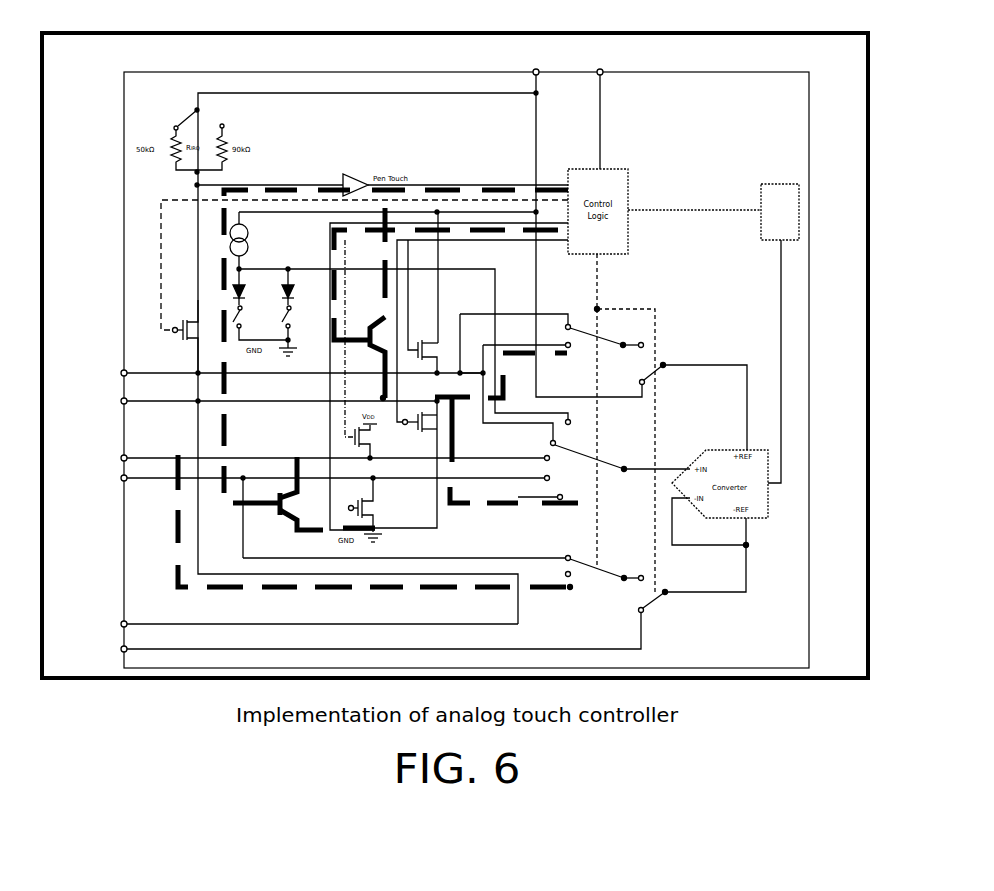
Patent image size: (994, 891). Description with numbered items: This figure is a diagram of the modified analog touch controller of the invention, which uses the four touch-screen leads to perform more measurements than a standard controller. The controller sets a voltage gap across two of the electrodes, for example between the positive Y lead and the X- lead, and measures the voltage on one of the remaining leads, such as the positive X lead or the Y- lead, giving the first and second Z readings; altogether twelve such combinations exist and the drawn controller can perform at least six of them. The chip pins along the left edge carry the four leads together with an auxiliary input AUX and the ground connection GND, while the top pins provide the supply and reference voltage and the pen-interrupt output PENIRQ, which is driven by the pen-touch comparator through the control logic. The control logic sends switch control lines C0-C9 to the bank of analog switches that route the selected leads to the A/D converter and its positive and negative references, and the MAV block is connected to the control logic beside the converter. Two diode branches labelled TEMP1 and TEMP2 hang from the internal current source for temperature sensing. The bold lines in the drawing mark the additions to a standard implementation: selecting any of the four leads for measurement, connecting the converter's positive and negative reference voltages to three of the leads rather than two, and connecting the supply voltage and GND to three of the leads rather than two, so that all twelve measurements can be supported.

The X− lead X- is at (273, 401).
The Y− lead Y- is at (328, 478).
The auxiliary input pin AUX is at (308, 624).
The element GND is at (369, 632).
The pen interrupt request pin PENIRQ is at (582, 54).
The MAV block MAV is at (780, 333).
The switch control lines C0-C9 is at (625, 423).
The temperature sensor diode 1 TEMP1 is at (246, 306).
The temperature sensor diode 2 TEMP2 is at (295, 306).